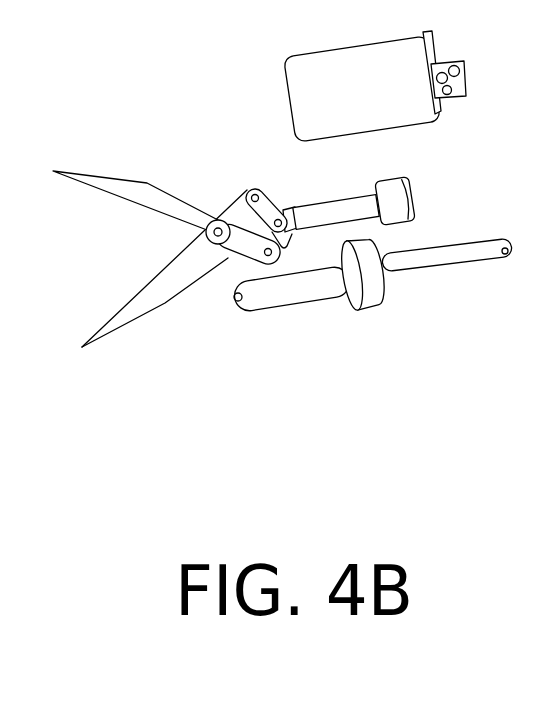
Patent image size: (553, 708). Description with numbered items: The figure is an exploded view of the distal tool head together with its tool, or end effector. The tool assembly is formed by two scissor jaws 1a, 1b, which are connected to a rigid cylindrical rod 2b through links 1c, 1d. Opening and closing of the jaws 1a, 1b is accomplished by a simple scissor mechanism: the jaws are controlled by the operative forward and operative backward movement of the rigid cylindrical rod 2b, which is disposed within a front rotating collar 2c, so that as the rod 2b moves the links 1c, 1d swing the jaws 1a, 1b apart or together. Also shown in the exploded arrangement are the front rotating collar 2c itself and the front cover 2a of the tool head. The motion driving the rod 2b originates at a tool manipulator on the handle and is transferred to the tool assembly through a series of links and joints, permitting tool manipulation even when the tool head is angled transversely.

The scissor jaw 1a is at (139, 167).
The scissor jaw 1b is at (142, 330).
The link 1c is at (272, 186).
The link 1d is at (288, 245).
The front cover 2a is at (433, 125).
The rigid cylindrical rod 2b is at (422, 195).
The front rotating collar 2c is at (367, 317).